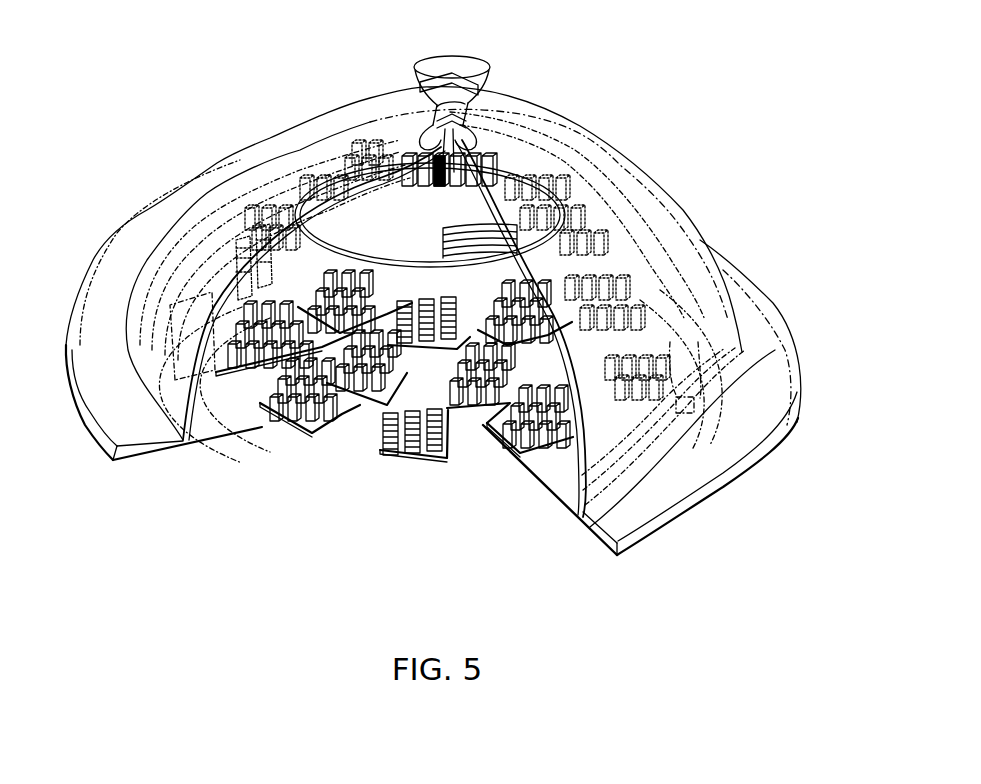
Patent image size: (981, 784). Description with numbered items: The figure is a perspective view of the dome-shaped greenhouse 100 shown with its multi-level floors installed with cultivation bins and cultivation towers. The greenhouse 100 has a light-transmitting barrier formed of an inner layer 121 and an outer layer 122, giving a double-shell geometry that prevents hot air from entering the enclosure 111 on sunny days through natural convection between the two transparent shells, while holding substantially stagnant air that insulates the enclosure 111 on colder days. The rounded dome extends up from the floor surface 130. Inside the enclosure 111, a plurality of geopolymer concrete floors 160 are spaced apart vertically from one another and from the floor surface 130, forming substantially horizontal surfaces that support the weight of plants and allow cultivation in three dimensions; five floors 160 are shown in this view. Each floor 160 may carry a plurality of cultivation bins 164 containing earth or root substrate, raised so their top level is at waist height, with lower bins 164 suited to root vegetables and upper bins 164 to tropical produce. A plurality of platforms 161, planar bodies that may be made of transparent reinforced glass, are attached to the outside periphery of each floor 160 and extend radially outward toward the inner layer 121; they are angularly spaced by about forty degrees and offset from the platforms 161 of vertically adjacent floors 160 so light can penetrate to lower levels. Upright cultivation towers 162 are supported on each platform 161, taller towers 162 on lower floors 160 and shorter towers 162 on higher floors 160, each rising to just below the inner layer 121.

The greenhouse 100 is at (690, 66).
The enclosure 111 is at (430, 218).
The inner layer 121 is at (587, 460).
The outer layer 122 is at (587, 447).
The floor surface 130 is at (200, 440).
The geopolymer concrete floor 160 is at (583, 170).
The platform 161 is at (230, 327).
The cultivation tower 162 is at (259, 240).
The cultivation bin 164 is at (543, 223).